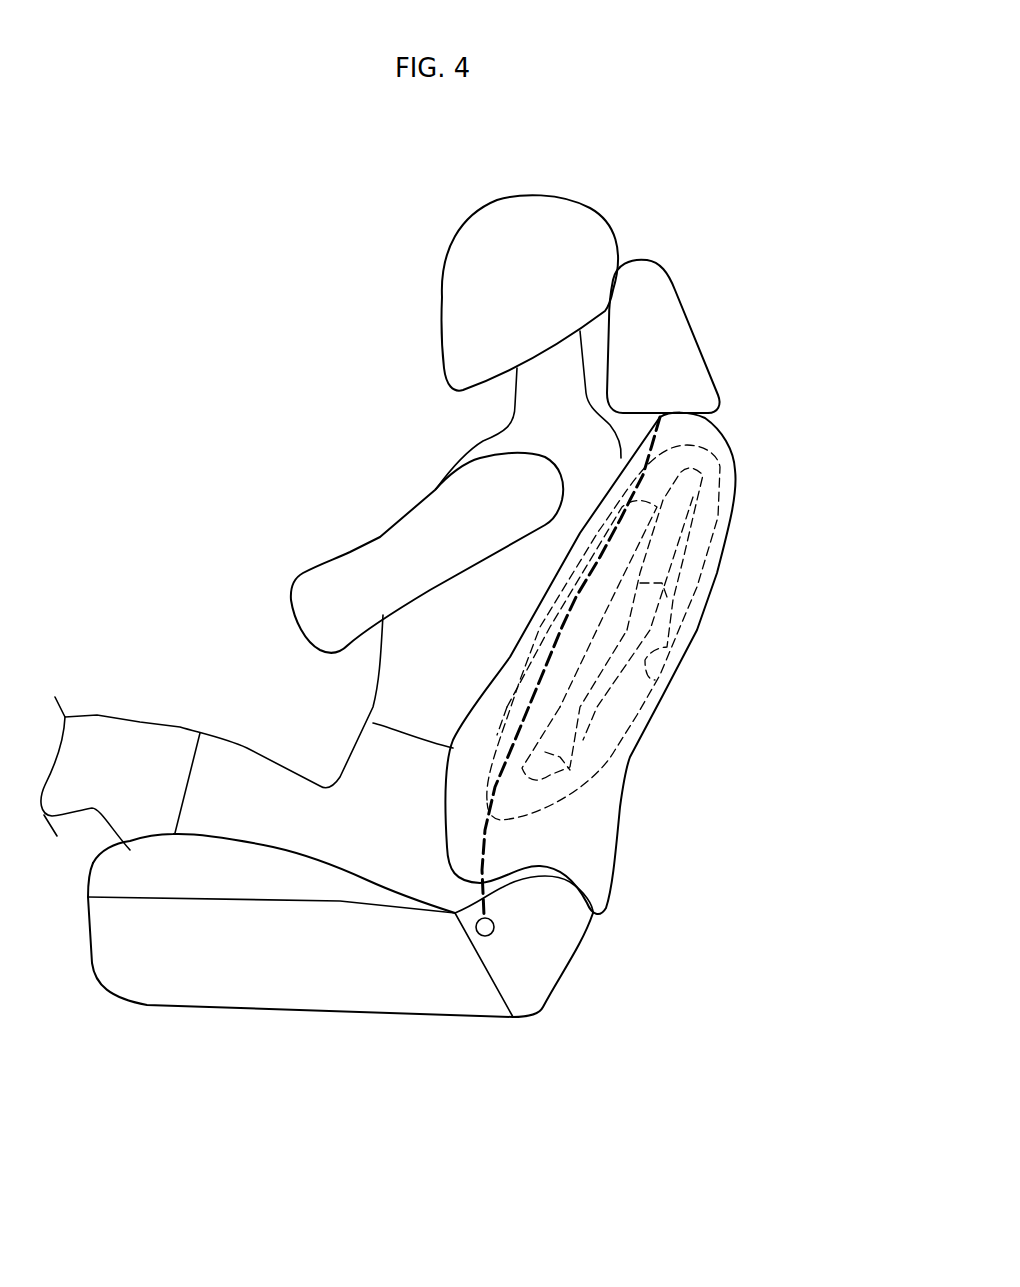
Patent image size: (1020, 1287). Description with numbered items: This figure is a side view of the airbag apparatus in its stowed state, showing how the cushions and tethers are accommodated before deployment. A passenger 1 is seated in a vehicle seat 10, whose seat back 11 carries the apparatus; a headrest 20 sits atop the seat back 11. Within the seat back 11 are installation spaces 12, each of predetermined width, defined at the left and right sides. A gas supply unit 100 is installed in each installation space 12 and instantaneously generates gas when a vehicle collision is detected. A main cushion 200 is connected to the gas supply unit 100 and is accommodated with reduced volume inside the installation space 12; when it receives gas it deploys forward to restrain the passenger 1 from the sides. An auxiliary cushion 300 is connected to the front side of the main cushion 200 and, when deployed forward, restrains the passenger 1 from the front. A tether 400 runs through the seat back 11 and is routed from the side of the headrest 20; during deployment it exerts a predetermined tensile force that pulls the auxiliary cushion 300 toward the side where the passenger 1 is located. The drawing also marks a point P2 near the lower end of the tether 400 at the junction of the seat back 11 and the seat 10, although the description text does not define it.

The passenger 1 is at (553, 232).
The vehicle seat 10 is at (242, 972).
The seat back 11 is at (713, 582).
The installation space 12 is at (645, 680).
The headrest 20 is at (673, 340).
The gas supply unit 100 is at (573, 740).
The main cushion 200 is at (683, 490).
The auxiliary cushion 300 is at (598, 593).
The tether 400 is at (540, 690).
The rotation point P2 is at (494, 934).